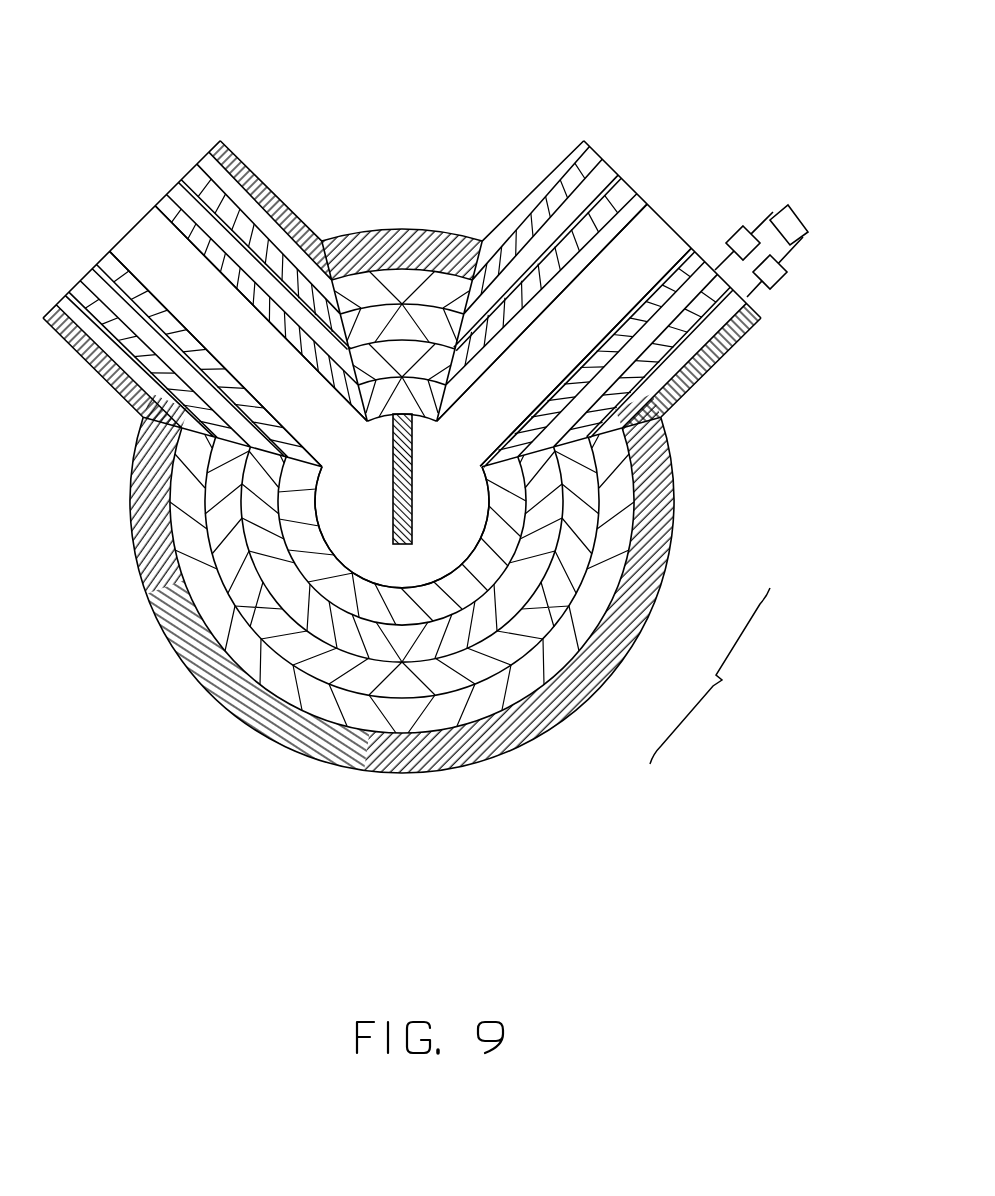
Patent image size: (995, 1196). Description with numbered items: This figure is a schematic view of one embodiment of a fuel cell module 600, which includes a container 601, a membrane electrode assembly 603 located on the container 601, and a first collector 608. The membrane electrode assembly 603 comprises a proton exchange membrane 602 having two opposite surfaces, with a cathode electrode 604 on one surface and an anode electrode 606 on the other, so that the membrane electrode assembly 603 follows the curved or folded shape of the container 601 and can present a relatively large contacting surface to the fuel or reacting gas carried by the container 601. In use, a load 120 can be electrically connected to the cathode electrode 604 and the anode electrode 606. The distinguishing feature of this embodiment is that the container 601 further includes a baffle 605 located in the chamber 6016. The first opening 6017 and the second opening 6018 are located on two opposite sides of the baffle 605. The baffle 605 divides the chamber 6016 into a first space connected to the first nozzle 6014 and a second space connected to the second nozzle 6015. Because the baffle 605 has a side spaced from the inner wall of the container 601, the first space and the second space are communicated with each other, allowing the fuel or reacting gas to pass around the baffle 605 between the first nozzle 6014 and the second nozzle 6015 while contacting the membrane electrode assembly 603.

The fuel cell module 600 is at (351, 62).
The container 601 is at (520, 492).
The proton exchange membrane 602 is at (528, 637).
The membrane electrode assembly 603 is at (713, 676).
The cathode electrode 604 is at (535, 565).
The baffle 605 is at (401, 546).
The anode electrode 606 is at (513, 685).
The first collector 608 is at (486, 742).
The load 120 is at (788, 224).
The first nozzle 6014 is at (597, 247).
The second nozzle 6015 is at (257, 412).
The chamber 6016 is at (342, 528).
The first opening 6017 is at (475, 432).
The second opening 6018 is at (330, 432).